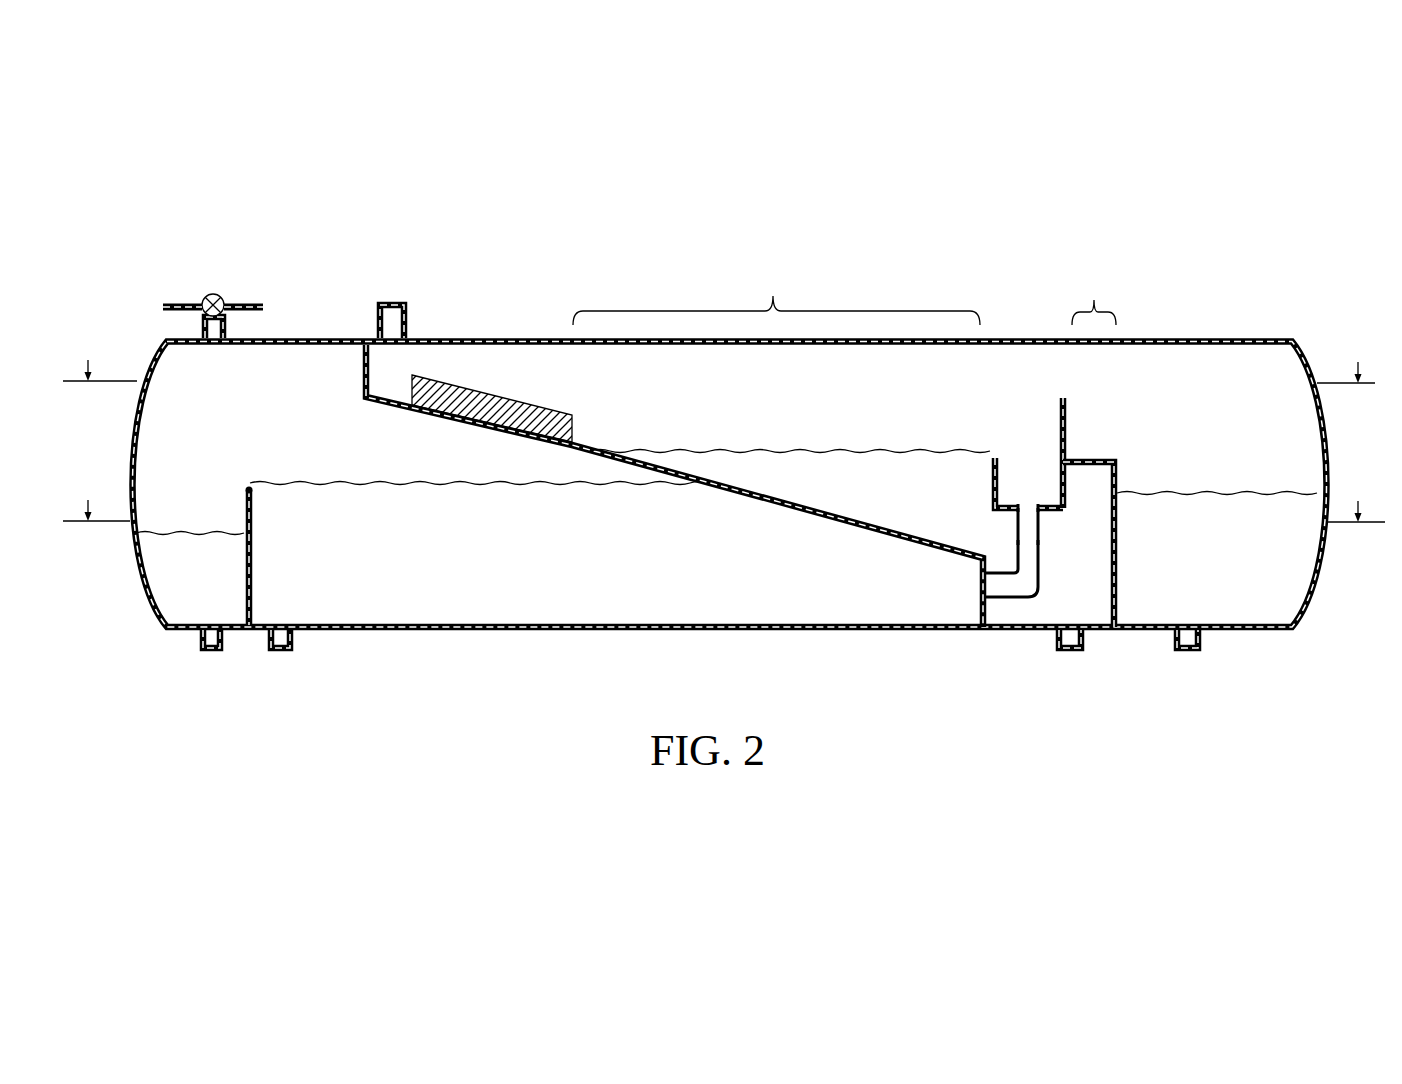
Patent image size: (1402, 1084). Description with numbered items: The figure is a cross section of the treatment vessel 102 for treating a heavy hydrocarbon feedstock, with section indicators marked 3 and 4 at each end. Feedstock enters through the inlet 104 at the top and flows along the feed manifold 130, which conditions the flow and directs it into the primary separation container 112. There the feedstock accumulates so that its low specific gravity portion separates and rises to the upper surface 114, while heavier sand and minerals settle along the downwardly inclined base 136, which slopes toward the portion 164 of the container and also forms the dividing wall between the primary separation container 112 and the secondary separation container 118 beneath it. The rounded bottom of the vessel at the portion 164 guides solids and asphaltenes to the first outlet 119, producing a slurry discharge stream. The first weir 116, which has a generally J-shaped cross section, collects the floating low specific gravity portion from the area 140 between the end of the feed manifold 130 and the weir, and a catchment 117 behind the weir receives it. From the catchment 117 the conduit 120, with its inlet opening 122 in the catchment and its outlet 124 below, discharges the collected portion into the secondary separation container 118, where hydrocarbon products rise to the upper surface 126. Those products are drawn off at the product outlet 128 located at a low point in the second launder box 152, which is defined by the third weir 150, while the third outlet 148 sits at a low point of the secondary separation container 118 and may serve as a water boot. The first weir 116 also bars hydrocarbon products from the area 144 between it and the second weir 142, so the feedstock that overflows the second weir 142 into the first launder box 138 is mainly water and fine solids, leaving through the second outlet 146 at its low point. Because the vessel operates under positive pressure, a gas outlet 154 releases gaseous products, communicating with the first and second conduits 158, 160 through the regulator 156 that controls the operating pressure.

The section line 3- 3 is at (719, 357).
The section line 4- 4 is at (724, 497).
The treatment vessel 102 is at (1247, 338).
The inlet 104 is at (393, 312).
The primary separation container 112 is at (896, 408).
The upper surface 114 is at (839, 451).
The first weir 116 is at (995, 458).
The catchment 117 is at (1038, 408).
The secondary separation container 118 is at (313, 420).
The first outlet 119 is at (1069, 650).
The conduit 120 is at (997, 584).
The inlet opening 122 is at (1029, 508).
The outlet 124 is at (993, 577).
The upper surface 126 is at (391, 482).
The product outlet 128 is at (213, 650).
The feed manifold 130 is at (497, 392).
The downwardly inclined base 136 is at (686, 480).
The first launder box 138 is at (1265, 465).
The area 140 is at (776, 292).
The second weir 142 is at (1117, 464).
The area 144 is at (1094, 292).
The second outlet 146 is at (1188, 650).
The third outlet 148 is at (281, 650).
The third weir 150 is at (249, 488).
The second launder box 152 is at (173, 493).
The gas outlet 154 is at (211, 331).
The regulator 156 is at (213, 293).
The first conduit 158 is at (177, 302).
The second conduit 160 is at (254, 302).
The portion 164 is at (1053, 583).